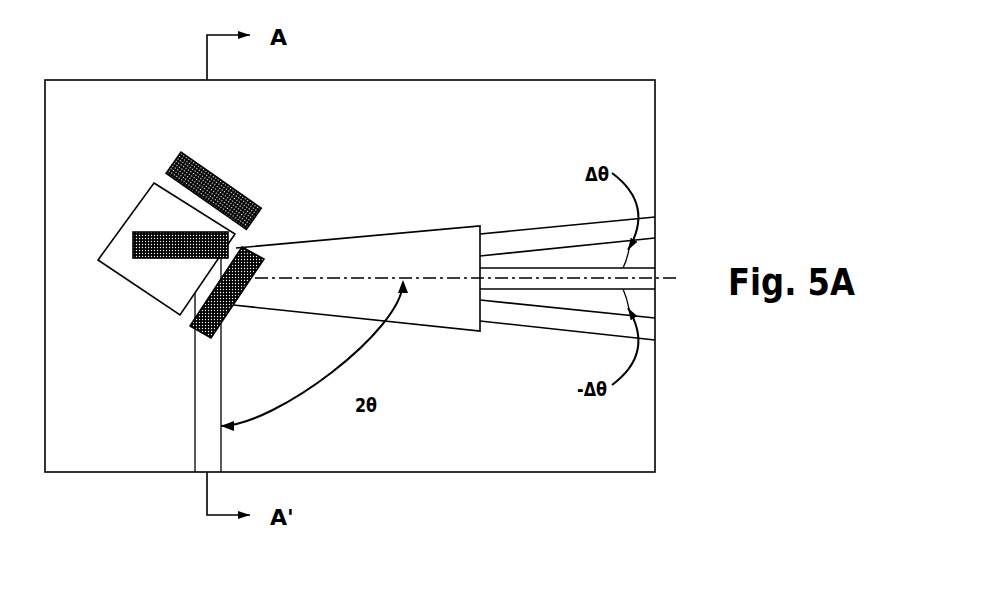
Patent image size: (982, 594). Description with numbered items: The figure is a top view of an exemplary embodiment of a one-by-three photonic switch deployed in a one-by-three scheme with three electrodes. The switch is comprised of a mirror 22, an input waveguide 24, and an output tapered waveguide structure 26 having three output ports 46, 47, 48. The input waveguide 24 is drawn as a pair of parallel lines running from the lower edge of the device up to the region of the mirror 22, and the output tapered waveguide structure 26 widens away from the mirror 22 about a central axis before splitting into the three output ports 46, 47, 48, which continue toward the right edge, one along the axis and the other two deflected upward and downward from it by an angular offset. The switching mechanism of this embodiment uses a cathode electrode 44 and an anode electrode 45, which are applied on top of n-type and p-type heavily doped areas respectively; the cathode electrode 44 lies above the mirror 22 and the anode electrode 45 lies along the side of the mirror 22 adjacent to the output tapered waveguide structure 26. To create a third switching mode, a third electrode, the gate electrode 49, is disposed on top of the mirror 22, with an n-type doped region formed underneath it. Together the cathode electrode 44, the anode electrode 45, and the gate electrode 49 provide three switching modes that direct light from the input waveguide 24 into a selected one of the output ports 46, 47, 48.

The mirror 22 is at (141, 229).
The input waveguide 24 is at (207, 417).
The output tapered waveguide structure 26 is at (357, 262).
The cathode electrode 44 is at (201, 185).
The anode electrode 45 is at (193, 326).
The output port 46 is at (557, 230).
The output port 47 is at (537, 278).
The output port 48 is at (537, 315).
The gate electrode 49 is at (160, 248).